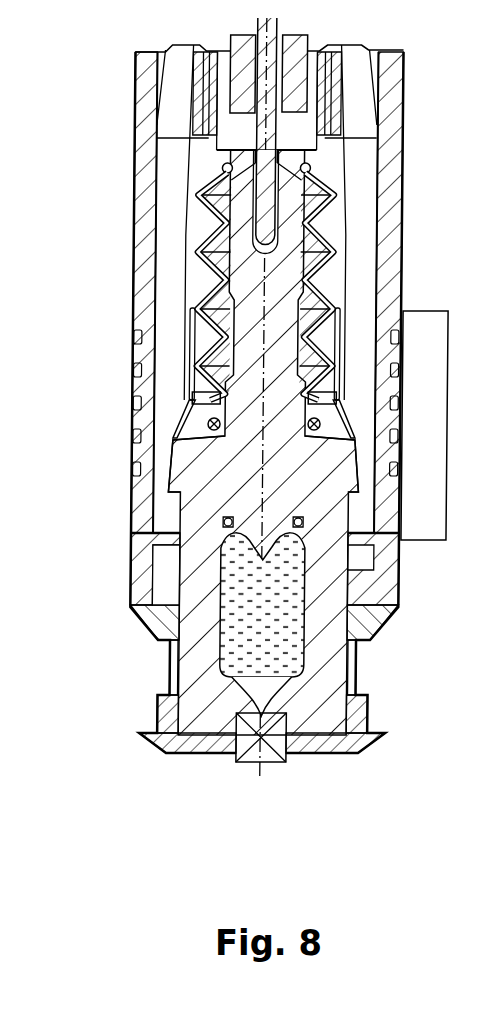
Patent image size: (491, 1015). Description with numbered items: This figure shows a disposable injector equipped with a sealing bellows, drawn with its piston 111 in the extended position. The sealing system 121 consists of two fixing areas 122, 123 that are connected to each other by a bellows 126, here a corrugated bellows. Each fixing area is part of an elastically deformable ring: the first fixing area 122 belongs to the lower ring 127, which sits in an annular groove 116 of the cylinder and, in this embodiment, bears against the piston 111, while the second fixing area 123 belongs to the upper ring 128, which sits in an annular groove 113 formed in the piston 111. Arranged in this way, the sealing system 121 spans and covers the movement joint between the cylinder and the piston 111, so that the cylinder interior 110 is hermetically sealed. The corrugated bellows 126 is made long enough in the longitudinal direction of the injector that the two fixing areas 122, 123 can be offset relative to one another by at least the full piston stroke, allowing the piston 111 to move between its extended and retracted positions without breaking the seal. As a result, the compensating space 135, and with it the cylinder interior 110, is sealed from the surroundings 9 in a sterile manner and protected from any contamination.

The surroundings 9 is at (134, 505).
The cylinder interior 110 is at (244, 553).
The piston 111 is at (254, 283).
The annular groove 113 is at (223, 153).
The annular groove 116 is at (203, 437).
The sealing system 121 is at (198, 297).
The fixing area 122 is at (218, 421).
The fixing area 123 is at (224, 161).
The bellows 126 is at (229, 235).
The lower ring 127 is at (213, 430).
The upper ring 128 is at (226, 171).
The compensating space 135 is at (216, 481).